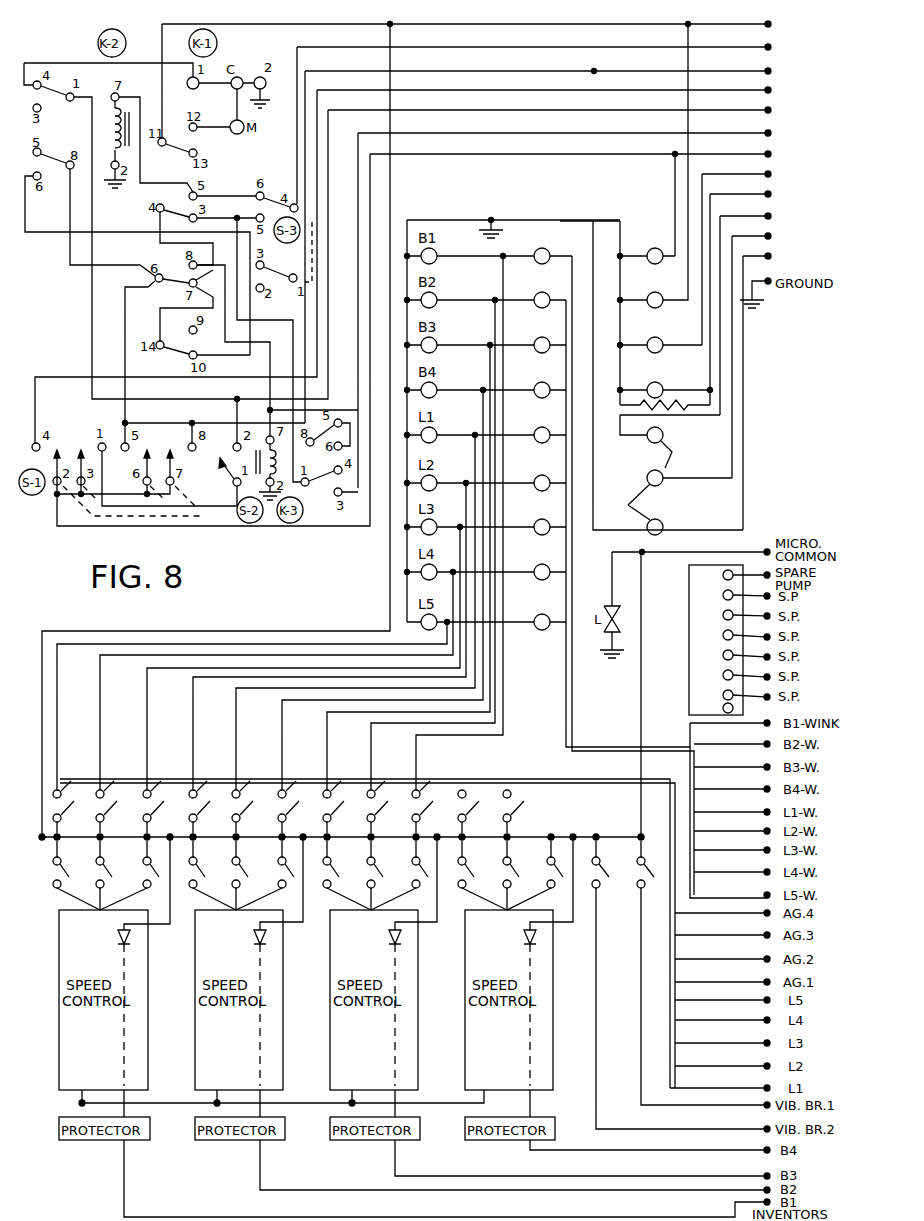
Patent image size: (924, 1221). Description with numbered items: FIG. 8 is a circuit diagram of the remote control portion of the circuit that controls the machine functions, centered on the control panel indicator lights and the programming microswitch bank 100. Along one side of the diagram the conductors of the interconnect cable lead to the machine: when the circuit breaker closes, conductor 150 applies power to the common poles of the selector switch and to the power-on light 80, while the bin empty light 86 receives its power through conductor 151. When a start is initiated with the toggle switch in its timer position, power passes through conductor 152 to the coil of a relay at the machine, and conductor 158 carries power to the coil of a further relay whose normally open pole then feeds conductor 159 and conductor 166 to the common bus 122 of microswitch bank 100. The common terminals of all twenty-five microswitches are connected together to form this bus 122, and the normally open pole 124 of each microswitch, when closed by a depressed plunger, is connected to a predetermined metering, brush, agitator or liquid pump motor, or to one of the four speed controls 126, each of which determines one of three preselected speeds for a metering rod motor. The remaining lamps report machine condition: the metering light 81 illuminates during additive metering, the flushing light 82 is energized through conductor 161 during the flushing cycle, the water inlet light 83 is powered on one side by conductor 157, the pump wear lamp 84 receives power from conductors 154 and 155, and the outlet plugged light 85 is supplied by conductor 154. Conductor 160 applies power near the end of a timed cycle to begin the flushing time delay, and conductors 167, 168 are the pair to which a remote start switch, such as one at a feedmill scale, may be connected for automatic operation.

The conductor 159 is at (758, 22).
The conductor 158 is at (758, 45).
The conductor 152 is at (758, 67).
The conductor 167 is at (758, 87).
The conductor 168 is at (758, 107).
The conductor 160 is at (758, 131).
The conductor 150 is at (758, 153).
The conductor 161 is at (752, 173).
The conductor 151 is at (750, 193).
The conductor 157 is at (758, 215).
The conductor 155 is at (764, 235).
The conductor 154 is at (768, 256).
The conductor 166 is at (390, 193).
The power-on light 80 is at (642, 250).
The metering light 81 is at (640, 297).
The flushing light 82 is at (644, 342).
The bin empty light 86 is at (646, 402).
The water inlet light 83 is at (650, 440).
The pump wear lamp 84 is at (664, 473).
The outlet plugged light 85 is at (658, 537).
The microswitch bank 100 is at (579, 834).
The common bus 122 is at (603, 845).
The normally open pole 124 is at (628, 887).
The speed control 126 is at (663, 1010).